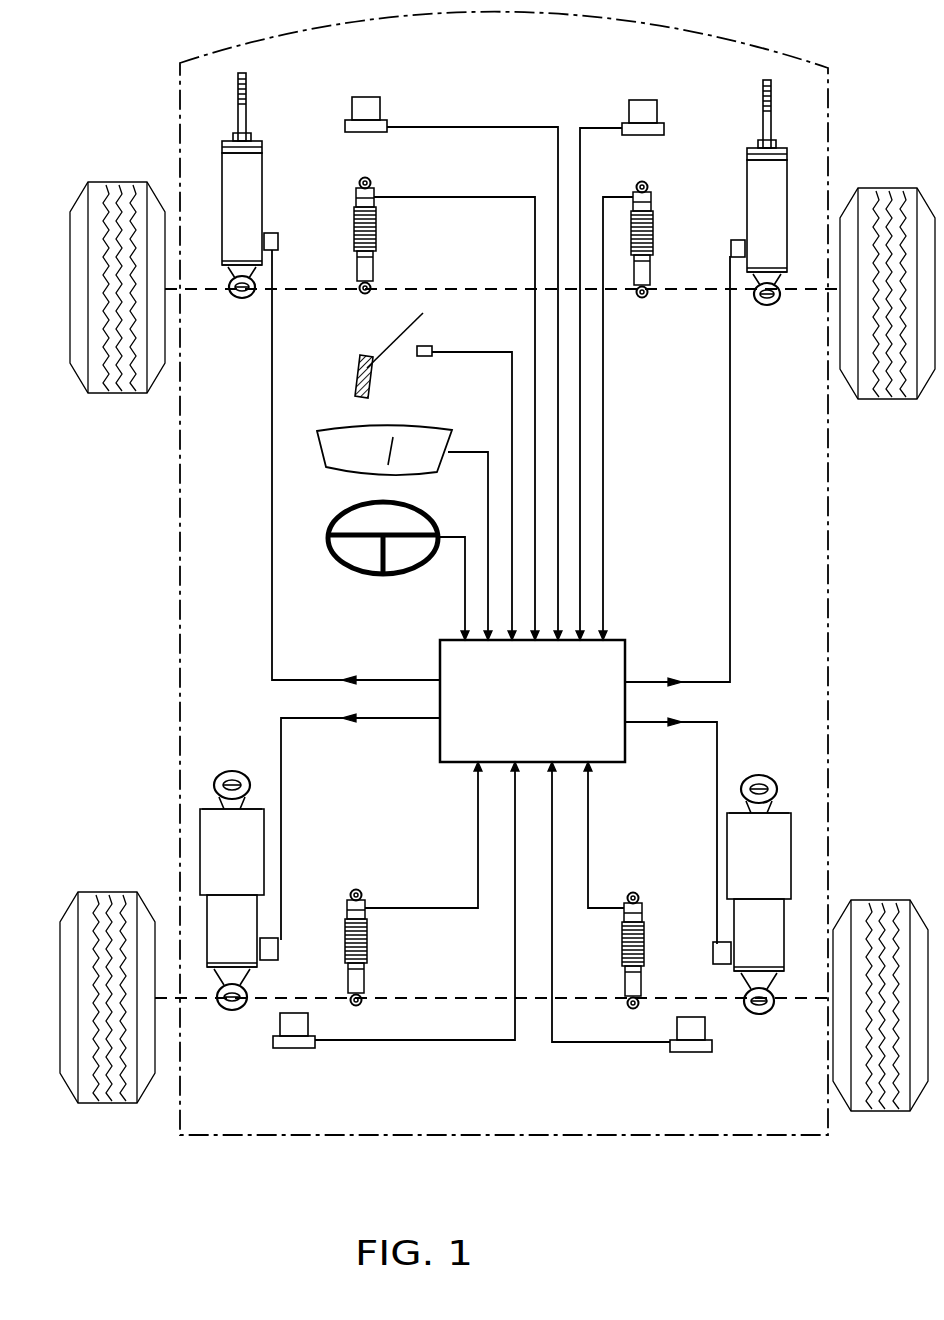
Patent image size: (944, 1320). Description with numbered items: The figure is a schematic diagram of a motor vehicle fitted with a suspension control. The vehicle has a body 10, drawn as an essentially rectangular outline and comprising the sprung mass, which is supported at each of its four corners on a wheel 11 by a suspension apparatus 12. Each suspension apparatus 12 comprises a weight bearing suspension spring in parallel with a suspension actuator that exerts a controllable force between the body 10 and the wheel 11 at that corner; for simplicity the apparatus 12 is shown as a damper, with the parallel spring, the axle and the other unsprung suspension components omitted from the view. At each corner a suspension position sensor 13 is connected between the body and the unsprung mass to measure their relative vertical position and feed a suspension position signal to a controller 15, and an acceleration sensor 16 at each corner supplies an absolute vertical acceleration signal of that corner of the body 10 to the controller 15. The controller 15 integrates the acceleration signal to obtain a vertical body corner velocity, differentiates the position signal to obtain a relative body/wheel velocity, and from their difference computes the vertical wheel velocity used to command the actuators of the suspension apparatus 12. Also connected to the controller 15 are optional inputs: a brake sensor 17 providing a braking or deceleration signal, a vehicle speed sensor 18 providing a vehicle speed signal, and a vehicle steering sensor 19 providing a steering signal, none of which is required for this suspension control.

The body 10 is at (256, 36).
The wheel 11 is at (120, 190).
The suspension apparatus 12 is at (248, 214).
The suspension position sensor 13 is at (372, 226).
The controller 15 is at (622, 662).
The acceleration sensor 16 is at (370, 112).
The brake sensor 17 is at (352, 380).
The vehicle speed sensor 18 is at (415, 433).
The vehicle steering sensor 19 is at (350, 552).